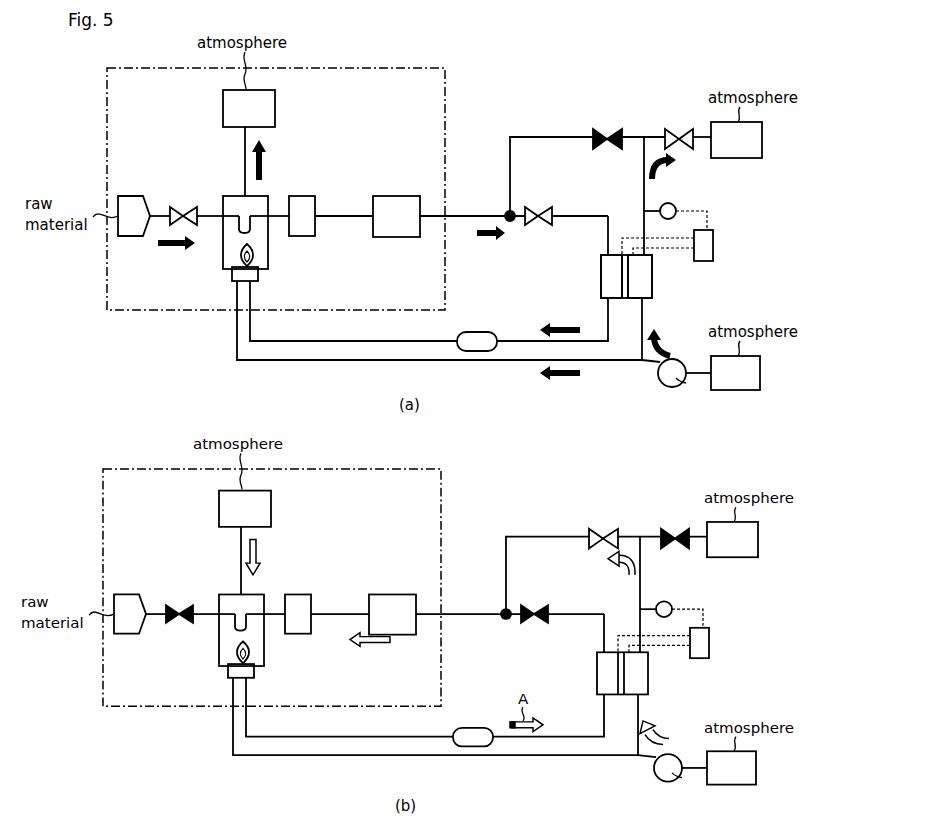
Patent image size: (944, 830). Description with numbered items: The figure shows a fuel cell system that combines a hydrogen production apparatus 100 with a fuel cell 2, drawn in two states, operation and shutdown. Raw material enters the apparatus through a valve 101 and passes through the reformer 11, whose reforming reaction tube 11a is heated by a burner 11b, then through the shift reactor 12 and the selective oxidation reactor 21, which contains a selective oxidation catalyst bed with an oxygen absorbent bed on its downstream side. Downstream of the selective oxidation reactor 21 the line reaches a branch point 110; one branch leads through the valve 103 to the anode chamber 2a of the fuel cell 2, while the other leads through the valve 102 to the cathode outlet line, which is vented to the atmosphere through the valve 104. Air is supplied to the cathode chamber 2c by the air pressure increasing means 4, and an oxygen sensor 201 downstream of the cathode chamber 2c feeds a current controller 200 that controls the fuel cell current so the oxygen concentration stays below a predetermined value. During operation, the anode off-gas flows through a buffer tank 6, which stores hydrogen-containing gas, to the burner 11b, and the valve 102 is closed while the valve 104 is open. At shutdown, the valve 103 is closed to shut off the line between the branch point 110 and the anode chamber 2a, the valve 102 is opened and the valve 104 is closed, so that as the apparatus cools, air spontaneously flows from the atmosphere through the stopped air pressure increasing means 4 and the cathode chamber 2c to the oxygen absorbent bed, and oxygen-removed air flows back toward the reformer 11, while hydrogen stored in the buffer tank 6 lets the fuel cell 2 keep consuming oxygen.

The hydrogen production apparatus 100 is at (162, 312).
The supply valve 101 is at (180, 205).
The reformer 11 is at (228, 199).
The reforming reaction tube 11a is at (237, 229).
The burner 11b is at (257, 279).
The shift reactor 12 is at (300, 200).
The selective oxidation reactor 21 is at (387, 200).
The branch point 110 is at (507, 213).
The valve 103 is at (539, 225).
The valve 102 is at (606, 131).
The valve 104 is at (677, 131).
The oxygen sensor 201 is at (676, 207).
The current controller 200 is at (713, 241).
The fuel cell 2 is at (626, 302).
The anode chamber 2a is at (607, 271).
The cathode chamber 2c is at (651, 270).
The buffer tank 6 is at (475, 330).
The air pressure increasing means 4 is at (683, 381).